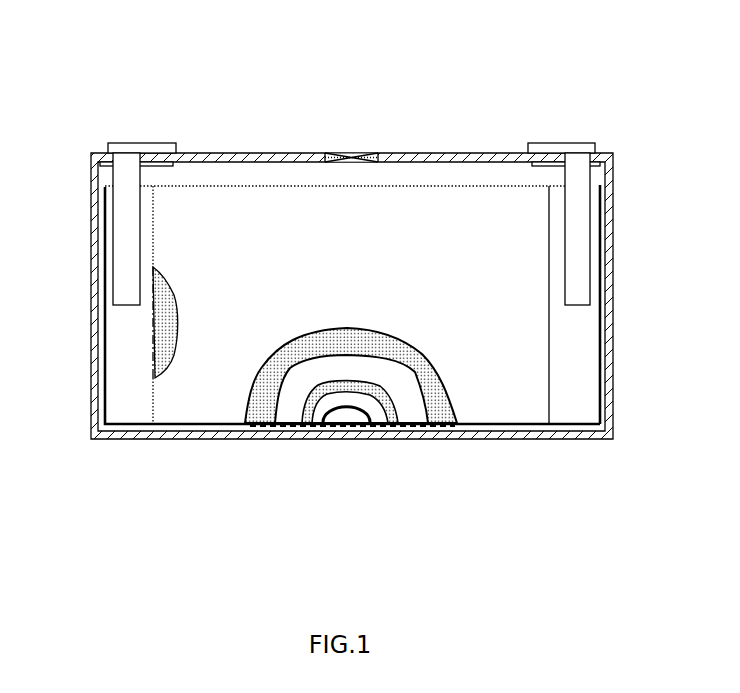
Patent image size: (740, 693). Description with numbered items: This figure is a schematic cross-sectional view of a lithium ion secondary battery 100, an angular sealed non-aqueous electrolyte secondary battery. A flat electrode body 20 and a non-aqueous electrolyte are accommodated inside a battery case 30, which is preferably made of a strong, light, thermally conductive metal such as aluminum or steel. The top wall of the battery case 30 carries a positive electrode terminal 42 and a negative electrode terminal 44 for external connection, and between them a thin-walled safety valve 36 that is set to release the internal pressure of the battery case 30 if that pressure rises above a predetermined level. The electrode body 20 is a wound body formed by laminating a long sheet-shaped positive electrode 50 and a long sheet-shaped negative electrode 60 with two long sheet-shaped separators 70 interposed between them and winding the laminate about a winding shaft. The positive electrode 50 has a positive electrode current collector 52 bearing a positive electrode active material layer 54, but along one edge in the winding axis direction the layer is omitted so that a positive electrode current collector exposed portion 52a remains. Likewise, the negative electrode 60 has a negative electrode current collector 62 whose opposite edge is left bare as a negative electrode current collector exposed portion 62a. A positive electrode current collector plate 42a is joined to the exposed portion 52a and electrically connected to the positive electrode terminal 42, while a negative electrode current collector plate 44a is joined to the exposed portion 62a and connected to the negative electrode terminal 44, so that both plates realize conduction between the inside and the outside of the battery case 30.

The lithium ion secondary battery 100 is at (630, 80).
The electrode body 20 is at (273, 185).
The battery case 30 is at (614, 260).
The safety valve 36 is at (355, 156).
The positive electrode terminal 42 is at (153, 142).
The positive electrode current collector plate 42a is at (125, 223).
The negative electrode terminal 44 is at (572, 142).
The negative electrode current collector plate 44a is at (580, 218).
The positive electrode 50 is at (262, 417).
The positive electrode current collector 52 is at (107, 329).
The positive electrode current collector exposed portion 52a is at (117, 398).
The positive electrode active material layer 54 is at (178, 298).
The negative electrode 60 is at (325, 413).
The negative electrode current collector 62 is at (600, 328).
The negative electrode current collector exposed portion 62a is at (582, 393).
The separator 70 is at (195, 377).